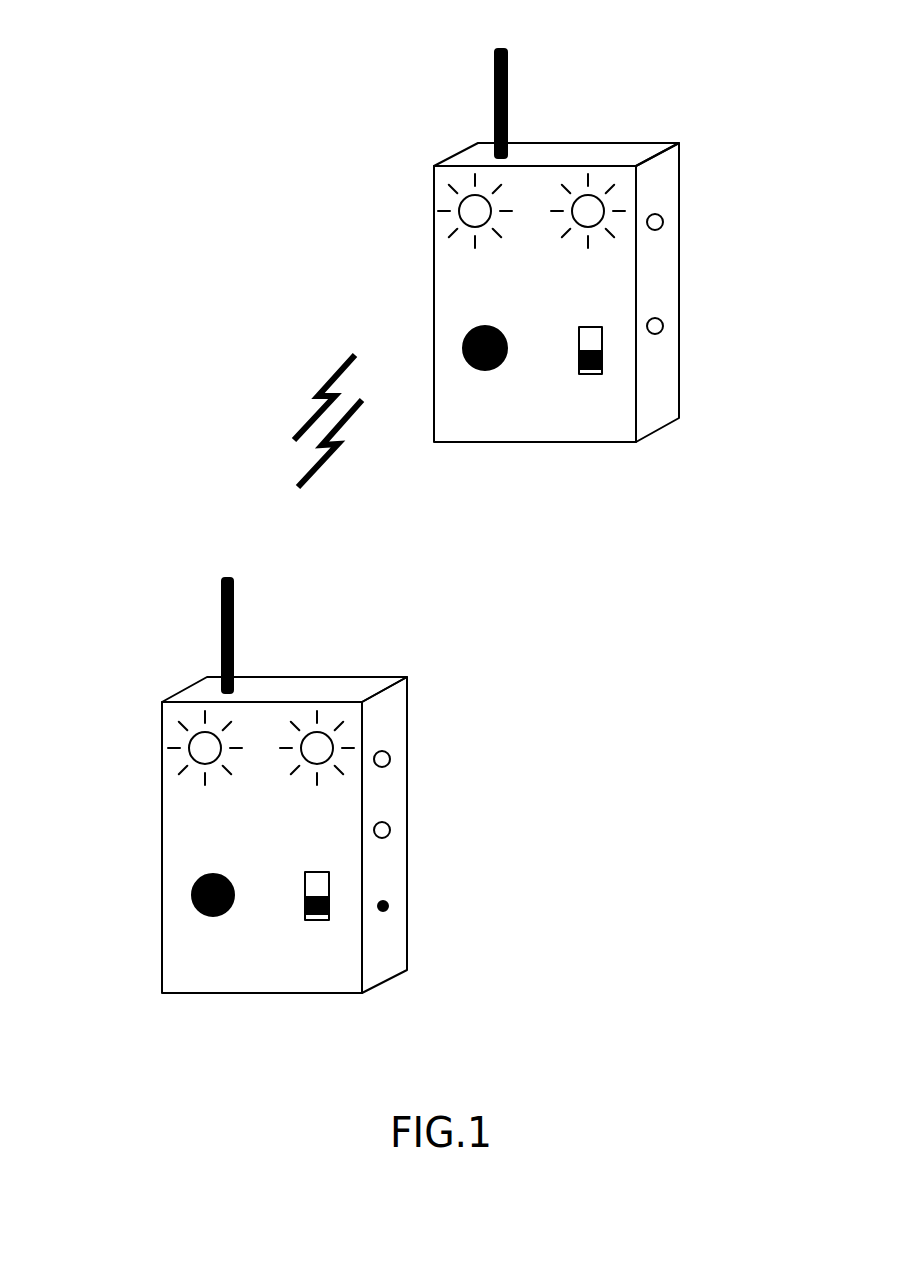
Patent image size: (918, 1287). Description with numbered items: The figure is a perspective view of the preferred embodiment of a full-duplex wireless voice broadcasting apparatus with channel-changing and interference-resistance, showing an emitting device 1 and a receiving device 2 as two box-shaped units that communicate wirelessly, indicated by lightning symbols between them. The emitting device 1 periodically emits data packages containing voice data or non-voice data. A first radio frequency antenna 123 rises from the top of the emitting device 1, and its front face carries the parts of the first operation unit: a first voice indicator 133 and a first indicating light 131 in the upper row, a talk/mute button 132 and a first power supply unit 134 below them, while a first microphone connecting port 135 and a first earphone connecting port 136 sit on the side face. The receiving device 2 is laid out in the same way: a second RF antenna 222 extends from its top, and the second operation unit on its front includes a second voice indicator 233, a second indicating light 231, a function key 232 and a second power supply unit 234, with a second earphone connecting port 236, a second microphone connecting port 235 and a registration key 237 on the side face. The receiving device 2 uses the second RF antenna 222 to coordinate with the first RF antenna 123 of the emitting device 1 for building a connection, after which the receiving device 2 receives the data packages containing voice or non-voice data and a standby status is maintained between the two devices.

The emitting device 1 is at (677, 124).
The first radio frequency antenna 123 is at (495, 105).
The first indicating light 131 is at (588, 210).
The talk/mute button 132 is at (482, 370).
The first voice indicator 133 is at (475, 211).
The first power supply unit 134 is at (592, 375).
The first microphone connecting port 135 is at (663, 222).
The first earphone connecting port 136 is at (663, 326).
The receiving device 2 is at (157, 674).
The second RF antenna 222 is at (233, 610).
The second indicating light 231 is at (318, 746).
The function key 232 is at (193, 898).
The second voice indicator 233 is at (205, 749).
The second power supply unit 234 is at (316, 922).
The second microphone connecting port 235 is at (390, 830).
The second earphone connecting port 236 is at (390, 759).
The registration key 237 is at (390, 910).